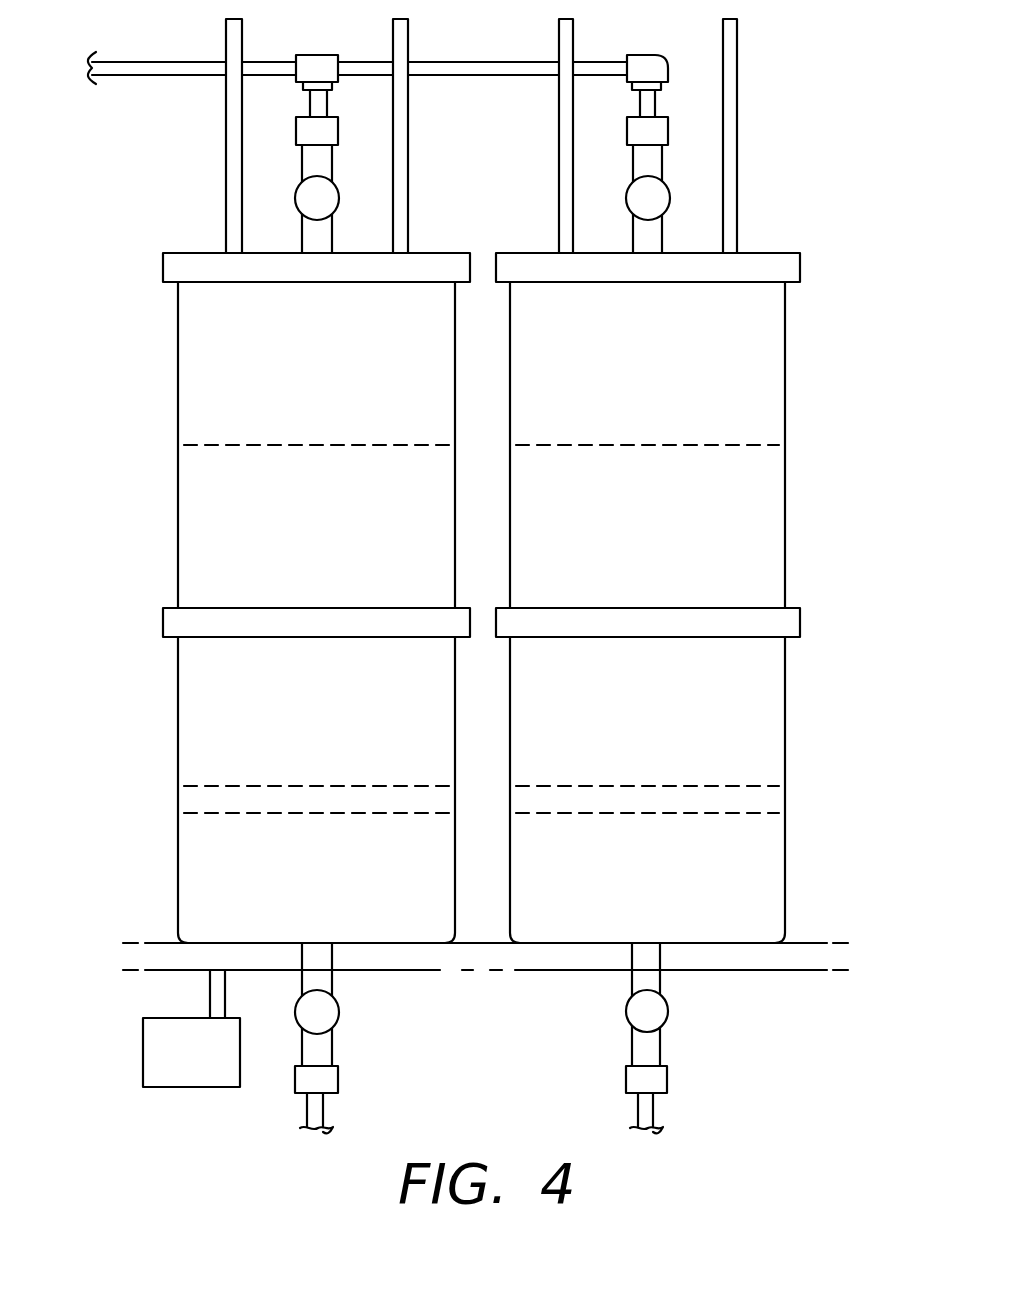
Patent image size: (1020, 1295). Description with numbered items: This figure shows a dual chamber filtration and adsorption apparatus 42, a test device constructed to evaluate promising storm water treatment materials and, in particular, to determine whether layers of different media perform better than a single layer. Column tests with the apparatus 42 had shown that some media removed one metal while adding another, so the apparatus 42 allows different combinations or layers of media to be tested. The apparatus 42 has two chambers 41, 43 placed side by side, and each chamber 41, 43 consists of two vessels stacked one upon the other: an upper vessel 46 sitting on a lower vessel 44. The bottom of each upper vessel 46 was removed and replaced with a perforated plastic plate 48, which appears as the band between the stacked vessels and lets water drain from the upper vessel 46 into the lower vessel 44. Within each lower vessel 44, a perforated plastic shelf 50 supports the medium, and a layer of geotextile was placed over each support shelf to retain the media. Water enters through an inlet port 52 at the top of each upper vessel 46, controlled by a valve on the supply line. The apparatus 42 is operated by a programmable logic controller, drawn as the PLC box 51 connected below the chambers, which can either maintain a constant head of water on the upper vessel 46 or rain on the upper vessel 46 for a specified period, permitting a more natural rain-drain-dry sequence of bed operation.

The chamber 41 is at (170, 252).
The dual chamber filtration and adsorption apparatus 42 is at (100, 330).
The chamber 43 is at (792, 252).
The lower vessel 44 is at (177, 683).
The upper vessel 46 is at (177, 548).
The perforated plastic plate 48 is at (163, 612).
The perforated plastic shelf 50 is at (213, 812).
The programmable logic controller (PLC) 51 is at (143, 1040).
The inlet port 52 is at (313, 246).